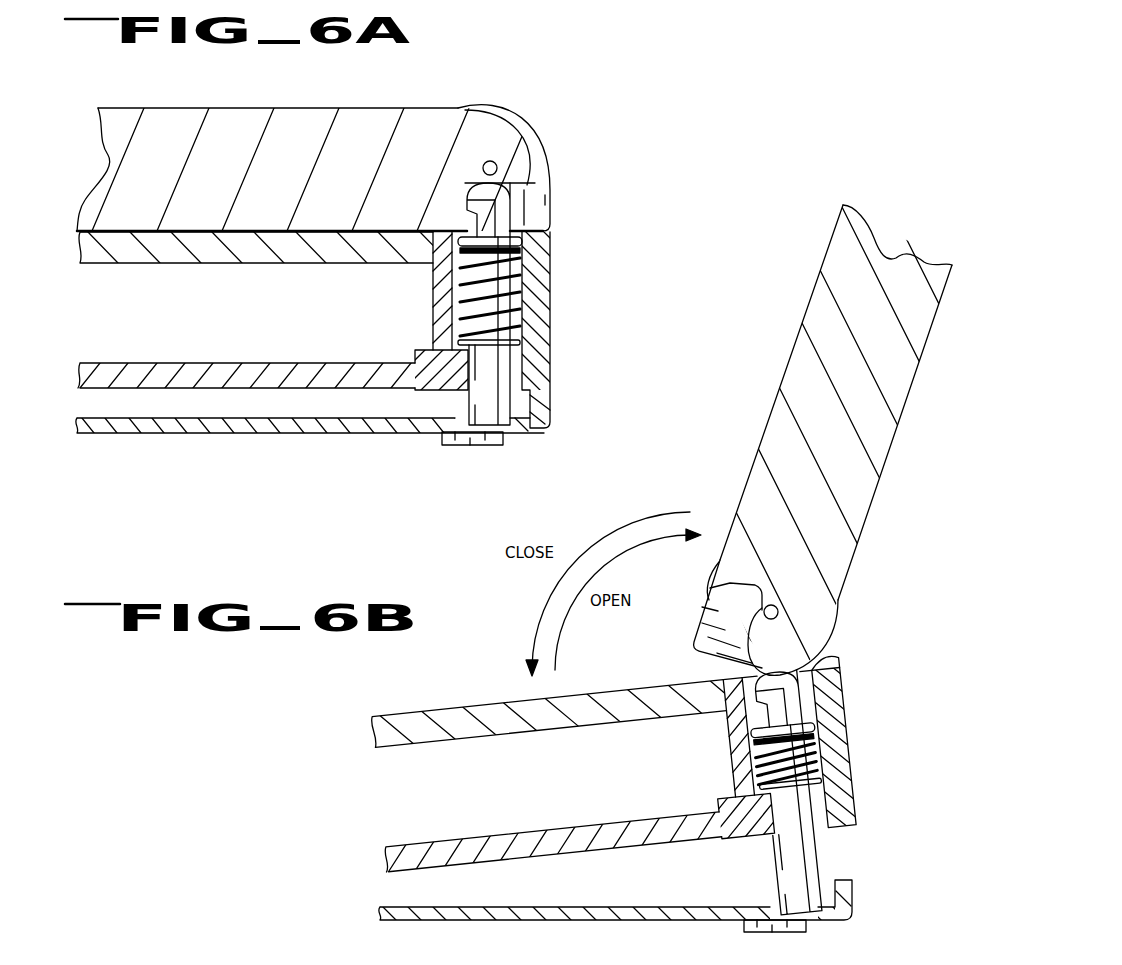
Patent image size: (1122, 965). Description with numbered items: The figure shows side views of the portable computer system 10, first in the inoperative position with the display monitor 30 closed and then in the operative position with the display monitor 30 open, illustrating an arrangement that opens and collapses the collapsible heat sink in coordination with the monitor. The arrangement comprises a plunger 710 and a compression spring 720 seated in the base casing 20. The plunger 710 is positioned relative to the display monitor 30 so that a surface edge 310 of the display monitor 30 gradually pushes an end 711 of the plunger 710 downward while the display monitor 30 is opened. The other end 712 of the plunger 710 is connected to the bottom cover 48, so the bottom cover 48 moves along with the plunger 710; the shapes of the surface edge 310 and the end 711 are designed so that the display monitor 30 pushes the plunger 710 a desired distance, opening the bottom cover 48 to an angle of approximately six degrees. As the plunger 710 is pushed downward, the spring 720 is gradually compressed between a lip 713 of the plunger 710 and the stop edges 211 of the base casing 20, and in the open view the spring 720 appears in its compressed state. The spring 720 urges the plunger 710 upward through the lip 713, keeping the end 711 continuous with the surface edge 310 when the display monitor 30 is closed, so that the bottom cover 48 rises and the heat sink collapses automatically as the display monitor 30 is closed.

In FIG. 6A, the computer system 10 is at (402, 85).
In FIG. 6B, the computer system 10 is at (453, 594).
In FIG. 6A, the base casing 20 is at (242, 263).
In FIG. 6B, the base casing 20 is at (495, 702).
In FIG. 6A, the display monitor 30 is at (214, 108).
In FIG. 6B, the display monitor 30 is at (777, 397).
In FIG. 6A, the bottom cover 48 is at (250, 433).
In FIG. 6B, the bottom cover 48 is at (571, 920).
In FIG. 6A, the stop edges 211 is at (456, 345).
In FIG. 6B, the stop edges 211 is at (728, 788).
In FIG. 6A, the surface edge 310 is at (495, 183).
In FIG. 6B, the surface edge 310 is at (762, 668).
In FIG. 6A, the plunger 710 is at (500, 396).
In FIG. 6B, the plunger 710 is at (820, 850).
In FIG. 6A, the end of the plunger 711 is at (510, 188).
In FIG. 6B, the end of the plunger 711 is at (790, 677).
In FIG. 6A, the other end of the plunger 712 is at (520, 427).
In FIG. 6B, the other end of the plunger 712 is at (822, 915).
In FIG. 6A, the lip 713 is at (523, 242).
In FIG. 6B, the lip 713 is at (808, 729).
In FIG. 6A, the compression spring 720 is at (460, 282).
In FIG. 6B, the compression spring 720 is at (750, 754).